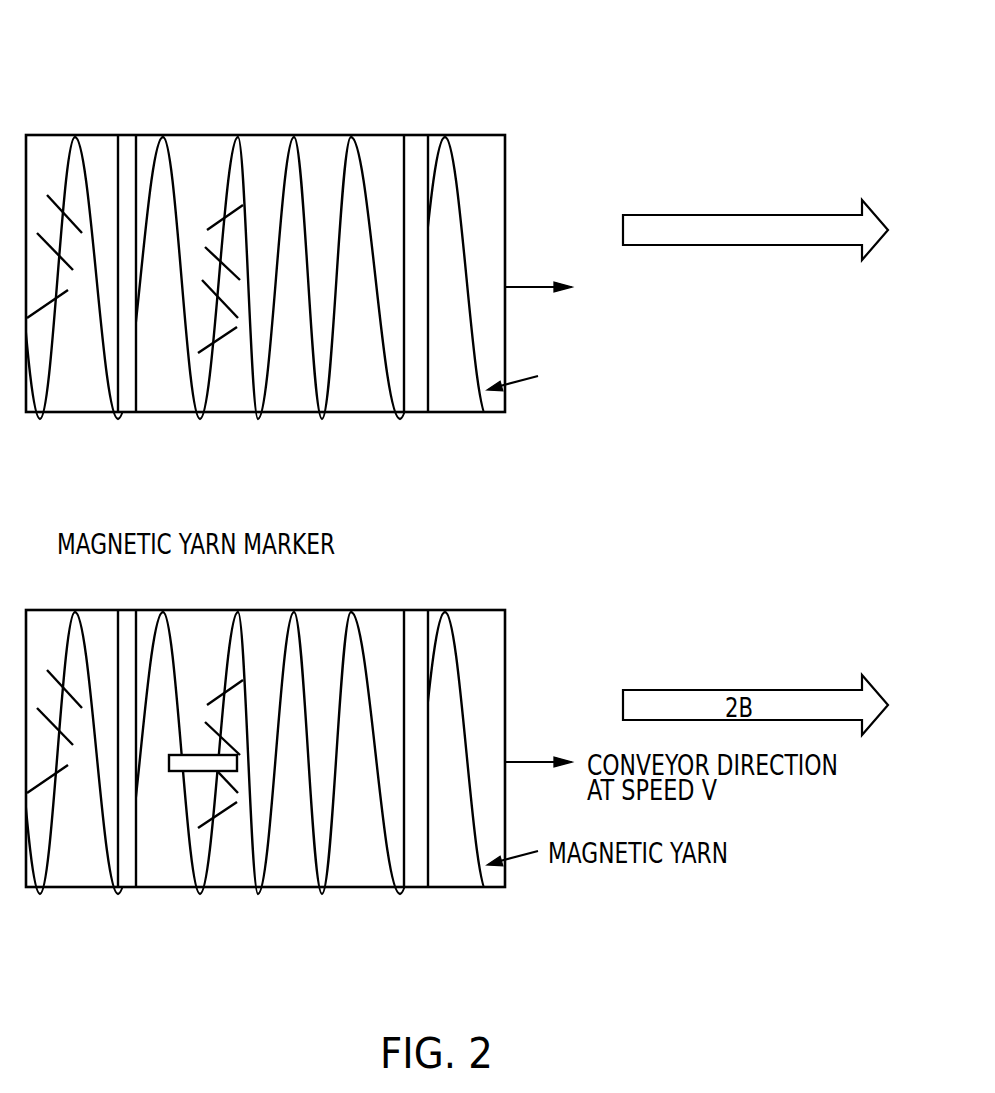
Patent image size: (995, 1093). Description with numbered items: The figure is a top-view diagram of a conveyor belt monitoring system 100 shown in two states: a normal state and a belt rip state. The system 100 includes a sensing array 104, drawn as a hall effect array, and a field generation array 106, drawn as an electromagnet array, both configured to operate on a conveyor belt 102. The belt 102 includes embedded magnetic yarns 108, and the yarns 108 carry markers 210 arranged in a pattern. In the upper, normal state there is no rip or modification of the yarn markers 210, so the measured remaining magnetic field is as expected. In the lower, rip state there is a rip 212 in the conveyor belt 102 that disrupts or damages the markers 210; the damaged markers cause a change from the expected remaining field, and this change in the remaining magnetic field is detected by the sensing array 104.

The conveyor belt monitoring system 100 is at (521, 41).
The conveyor belt 102 is at (505, 183).
The sensing array 104 is at (90, 70).
The field generation array 106 is at (385, 70).
The magnetic yarns 108 is at (505, 385).
The markers 210 is at (233, 354).
The rip 212 is at (200, 786).